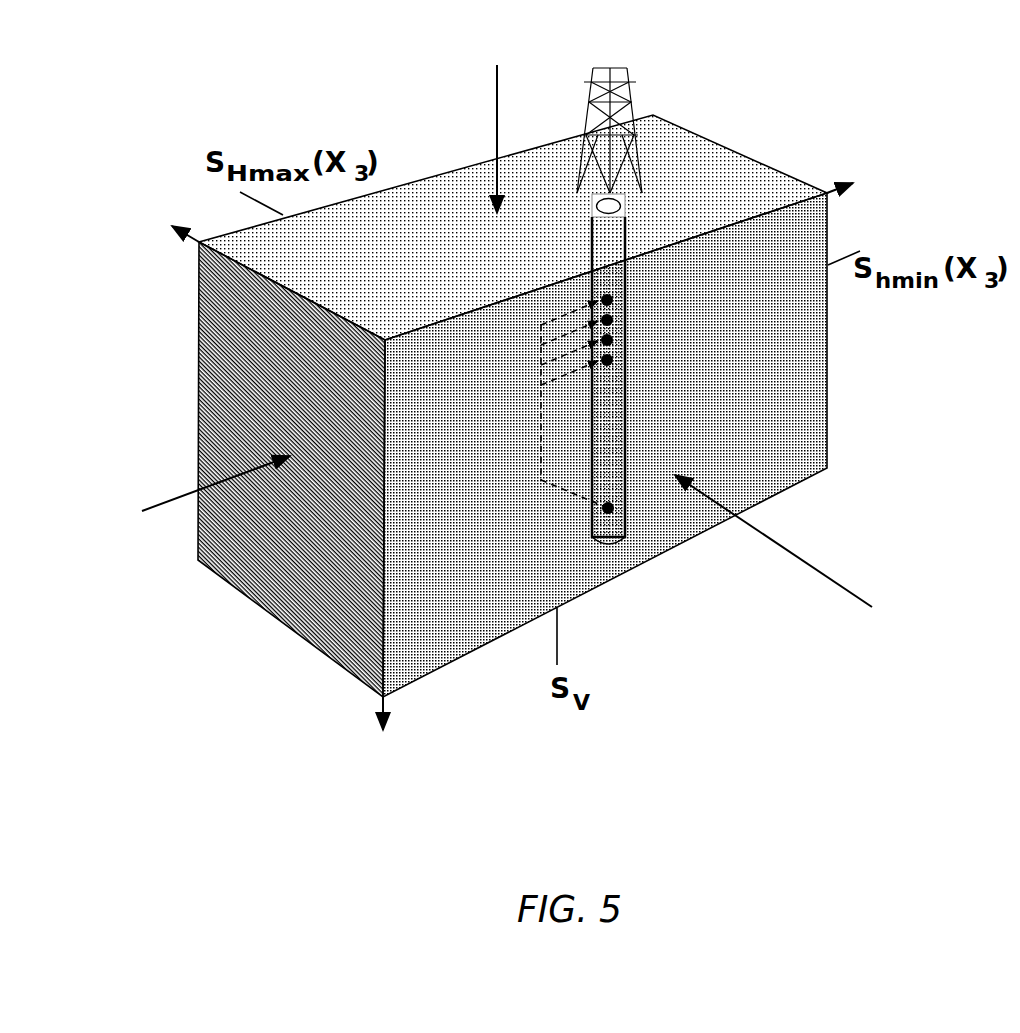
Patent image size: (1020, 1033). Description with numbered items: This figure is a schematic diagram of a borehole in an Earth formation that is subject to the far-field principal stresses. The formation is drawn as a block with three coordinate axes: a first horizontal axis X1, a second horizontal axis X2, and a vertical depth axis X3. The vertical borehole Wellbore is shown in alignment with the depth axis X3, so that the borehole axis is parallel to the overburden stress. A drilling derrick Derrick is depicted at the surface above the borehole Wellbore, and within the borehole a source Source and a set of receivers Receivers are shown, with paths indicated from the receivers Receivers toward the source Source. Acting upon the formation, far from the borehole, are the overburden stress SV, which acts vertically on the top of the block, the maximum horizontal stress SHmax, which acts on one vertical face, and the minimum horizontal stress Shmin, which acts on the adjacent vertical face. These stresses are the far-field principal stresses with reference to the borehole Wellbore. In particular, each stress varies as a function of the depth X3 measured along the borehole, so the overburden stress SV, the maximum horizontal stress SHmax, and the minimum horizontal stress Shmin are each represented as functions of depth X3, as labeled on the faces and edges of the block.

The x1 axis X1 is at (164, 221).
The x2 axis X2 is at (864, 185).
The depth axis X3 is at (392, 737).
The overburden stress SV is at (516, 117).
The minimum horizontal stress Shmin is at (185, 502).
The maximum horizontal stress SHmax is at (805, 559).
The receivers in wellbore Receivers is at (694, 330).
The seismic source in wellbore Source is at (540, 514).
The borehole Wellbore is at (608, 369).
The drilling rig derrick Derrick is at (609, 130).